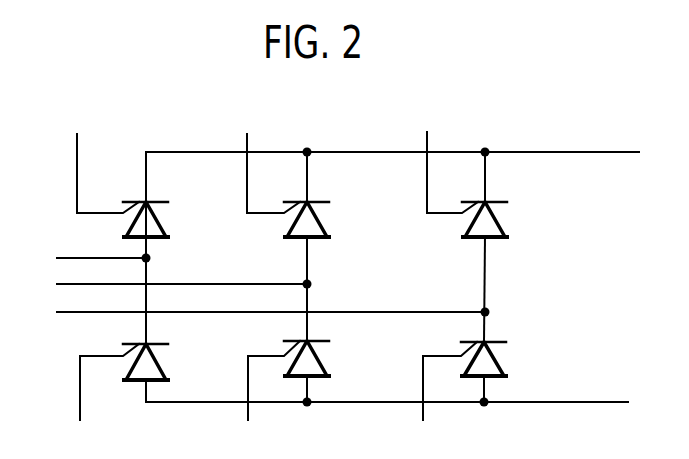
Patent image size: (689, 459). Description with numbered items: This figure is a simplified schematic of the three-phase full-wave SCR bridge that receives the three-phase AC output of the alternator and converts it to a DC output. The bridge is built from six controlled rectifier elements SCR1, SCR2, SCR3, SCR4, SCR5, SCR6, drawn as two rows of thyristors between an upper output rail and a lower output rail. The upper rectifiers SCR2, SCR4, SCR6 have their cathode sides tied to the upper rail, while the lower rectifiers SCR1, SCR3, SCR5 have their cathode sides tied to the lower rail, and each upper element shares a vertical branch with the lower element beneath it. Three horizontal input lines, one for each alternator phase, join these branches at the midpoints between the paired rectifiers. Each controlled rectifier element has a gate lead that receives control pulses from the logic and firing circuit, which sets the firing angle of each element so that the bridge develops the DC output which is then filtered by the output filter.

The controlled rectifier element SCR1 is at (144, 382).
The controlled rectifier element SCR2 is at (146, 190).
The controlled rectifier element SCR3 is at (313, 380).
The controlled rectifier element SCR4 is at (312, 190).
The controlled rectifier element SCR5 is at (490, 381).
The controlled rectifier element SCR6 is at (491, 189).